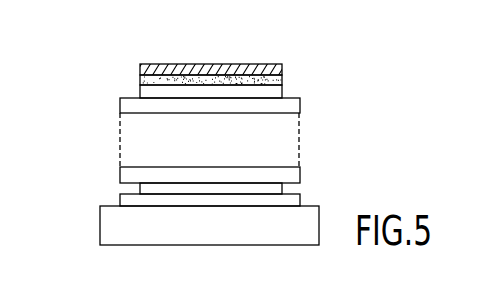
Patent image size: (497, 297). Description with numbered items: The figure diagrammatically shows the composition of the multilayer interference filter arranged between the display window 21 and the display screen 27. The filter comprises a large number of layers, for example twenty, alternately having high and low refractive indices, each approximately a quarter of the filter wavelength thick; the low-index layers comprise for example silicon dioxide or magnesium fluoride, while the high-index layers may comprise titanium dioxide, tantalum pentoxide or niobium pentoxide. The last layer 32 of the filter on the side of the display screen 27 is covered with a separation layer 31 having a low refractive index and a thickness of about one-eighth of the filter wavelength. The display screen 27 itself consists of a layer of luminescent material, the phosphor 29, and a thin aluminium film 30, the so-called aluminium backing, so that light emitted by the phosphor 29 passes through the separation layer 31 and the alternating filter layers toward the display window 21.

The display window 21 is at (112, 220).
The display screen 27 is at (123, 65).
The phosphor 29 is at (140, 80).
The aluminium film 30 is at (188, 63).
The separation layer 31 is at (150, 91).
The last layer 32 is at (125, 103).